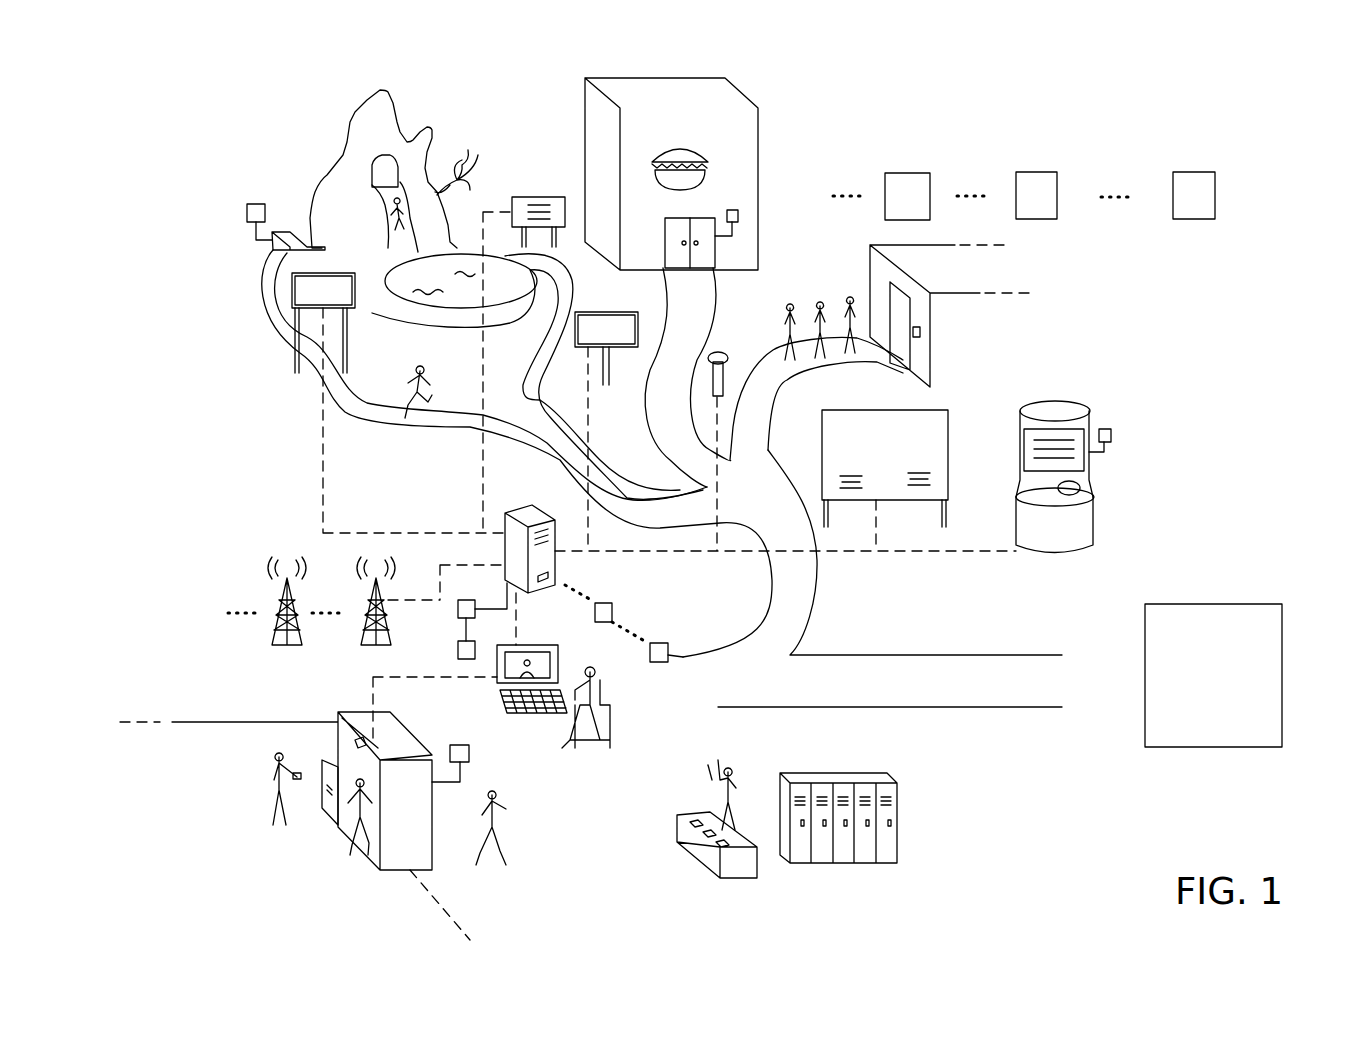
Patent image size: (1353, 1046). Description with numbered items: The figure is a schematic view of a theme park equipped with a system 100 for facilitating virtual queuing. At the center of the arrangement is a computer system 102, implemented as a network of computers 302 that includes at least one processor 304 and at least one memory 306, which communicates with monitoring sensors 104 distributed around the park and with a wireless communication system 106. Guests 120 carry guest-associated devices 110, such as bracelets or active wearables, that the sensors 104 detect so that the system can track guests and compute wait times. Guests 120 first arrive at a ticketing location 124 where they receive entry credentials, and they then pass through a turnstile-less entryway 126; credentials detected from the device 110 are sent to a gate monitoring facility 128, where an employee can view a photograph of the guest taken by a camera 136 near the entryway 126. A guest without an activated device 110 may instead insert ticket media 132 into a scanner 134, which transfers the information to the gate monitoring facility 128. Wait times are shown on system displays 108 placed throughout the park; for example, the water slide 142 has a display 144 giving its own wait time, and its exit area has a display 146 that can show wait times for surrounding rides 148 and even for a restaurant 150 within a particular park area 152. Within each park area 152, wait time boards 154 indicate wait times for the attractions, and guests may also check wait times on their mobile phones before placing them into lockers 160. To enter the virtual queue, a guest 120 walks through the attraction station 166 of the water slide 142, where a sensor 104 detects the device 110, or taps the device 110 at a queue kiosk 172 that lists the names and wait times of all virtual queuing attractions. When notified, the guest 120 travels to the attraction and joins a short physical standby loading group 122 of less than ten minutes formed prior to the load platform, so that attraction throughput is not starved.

The system 100 is at (253, 437).
The computer system 102 is at (515, 492).
The monitoring sensors 104 is at (247, 213).
The wireless communication system 106 is at (300, 545).
The system displays 108 is at (313, 273).
The guest-associated devices 110 is at (335, 820).
The guests 120 is at (405, 136).
The standby loading group 122 is at (828, 373).
The ticketing location 124 is at (290, 703).
The entryway 126 is at (420, 870).
The gate monitoring facility 128 is at (536, 733).
The ticket media 132 is at (300, 768).
The scanner 134 is at (322, 808).
The camera 136 is at (352, 740).
The water slide 142 is at (342, 148).
The display 144 is at (346, 308).
The display 146 is at (548, 197).
The rides 148 is at (910, 173).
The restaurant 150 is at (745, 90).
The park area 152 is at (505, 93).
The wait time boards 154 is at (913, 500).
The lockers 160 is at (835, 773).
The attraction station 166 is at (295, 238).
The queue kiosk 172 is at (1054, 401).
The network of computers 302 is at (630, 600).
The processor 304 is at (466, 600).
The memory 306 is at (458, 650).